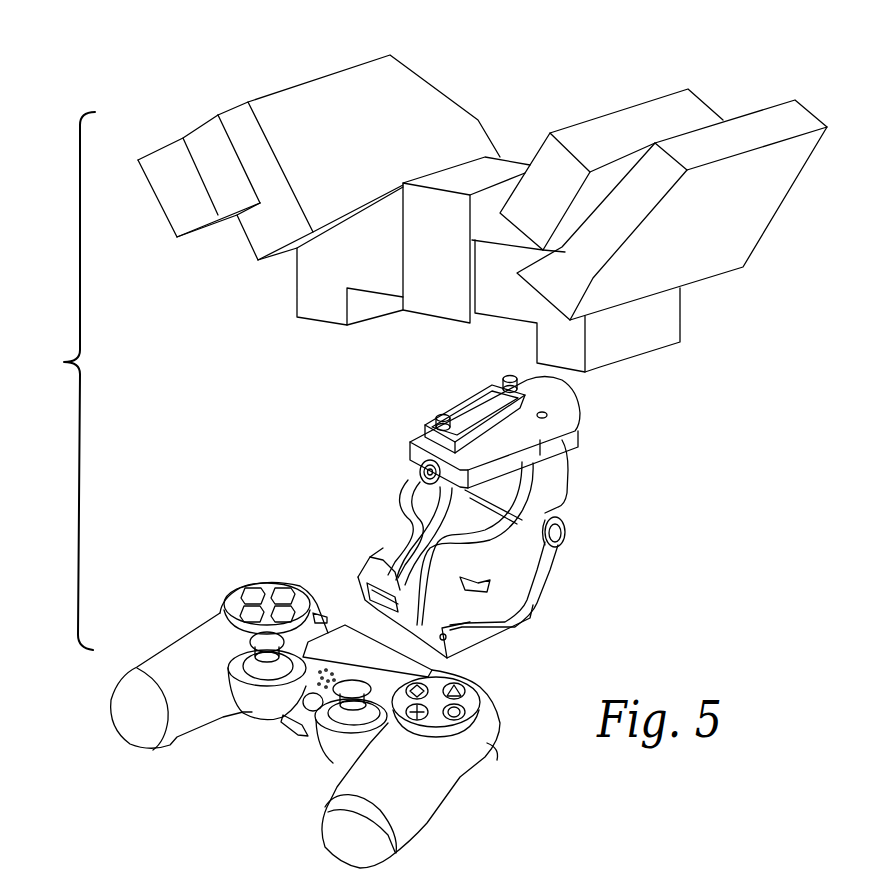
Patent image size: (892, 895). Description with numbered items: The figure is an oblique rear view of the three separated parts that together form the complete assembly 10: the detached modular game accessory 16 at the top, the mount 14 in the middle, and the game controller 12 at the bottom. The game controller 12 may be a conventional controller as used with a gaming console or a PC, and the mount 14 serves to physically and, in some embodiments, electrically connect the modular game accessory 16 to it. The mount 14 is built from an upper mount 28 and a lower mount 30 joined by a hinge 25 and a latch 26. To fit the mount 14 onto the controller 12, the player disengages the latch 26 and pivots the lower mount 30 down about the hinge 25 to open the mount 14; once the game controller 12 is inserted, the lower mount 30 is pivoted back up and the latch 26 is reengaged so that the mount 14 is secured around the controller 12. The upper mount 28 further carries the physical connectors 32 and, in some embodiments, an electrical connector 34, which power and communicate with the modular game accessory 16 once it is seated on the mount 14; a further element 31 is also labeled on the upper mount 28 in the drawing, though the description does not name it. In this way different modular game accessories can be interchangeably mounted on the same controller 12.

The complete assembly 10 is at (61, 381).
The game controller 12 is at (457, 803).
The mount 14 is at (314, 450).
The modular game accessory 16 is at (325, 85).
The hinge 25 is at (565, 530).
The latch 26 is at (382, 610).
The upper mount 28 is at (567, 470).
The lower mount 30 is at (527, 617).
The fastener 31 is at (504, 381).
The physical connectors 32 is at (436, 420).
The electrical connector 34 is at (468, 417).